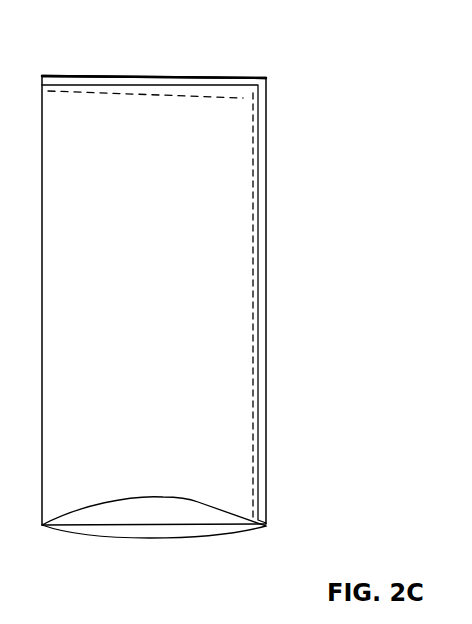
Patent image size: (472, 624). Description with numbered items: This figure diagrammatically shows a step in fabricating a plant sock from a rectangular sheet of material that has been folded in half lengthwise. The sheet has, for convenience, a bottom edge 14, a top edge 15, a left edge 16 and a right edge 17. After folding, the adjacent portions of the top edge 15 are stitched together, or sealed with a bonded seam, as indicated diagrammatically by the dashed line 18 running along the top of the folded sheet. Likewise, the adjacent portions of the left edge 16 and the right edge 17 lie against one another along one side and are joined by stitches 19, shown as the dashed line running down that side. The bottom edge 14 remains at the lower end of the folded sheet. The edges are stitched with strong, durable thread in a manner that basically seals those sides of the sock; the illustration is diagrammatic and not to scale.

The bottom edge 14 is at (180, 537).
The top edge 15 is at (147, 82).
The left edge 16 is at (260, 333).
The right edge 17 is at (259, 281).
The stitching of top edge 18 is at (170, 98).
The stitches 19 is at (250, 215).